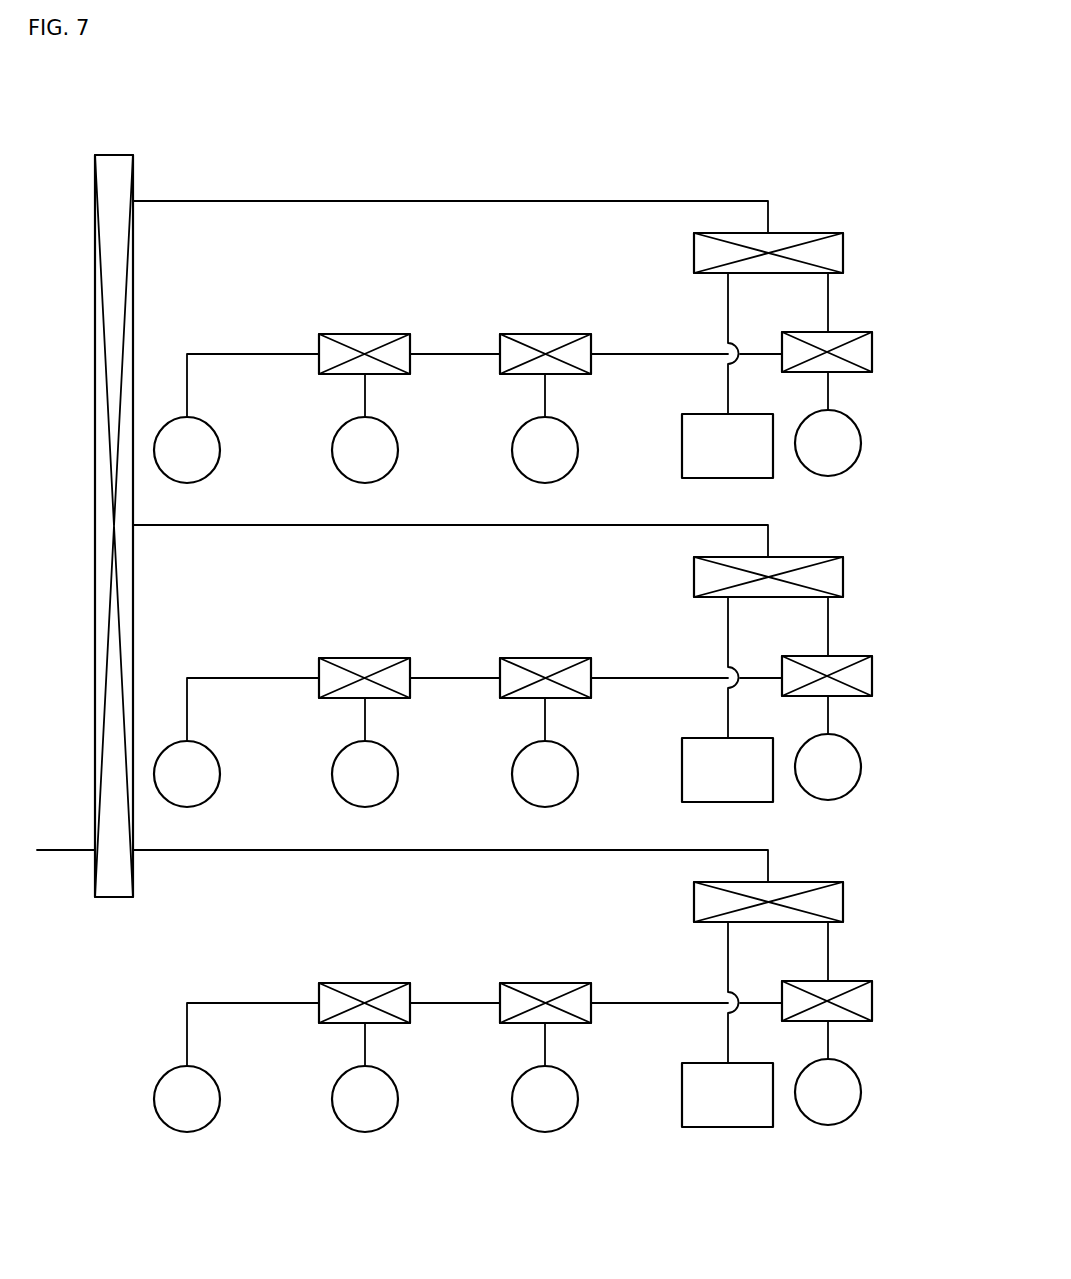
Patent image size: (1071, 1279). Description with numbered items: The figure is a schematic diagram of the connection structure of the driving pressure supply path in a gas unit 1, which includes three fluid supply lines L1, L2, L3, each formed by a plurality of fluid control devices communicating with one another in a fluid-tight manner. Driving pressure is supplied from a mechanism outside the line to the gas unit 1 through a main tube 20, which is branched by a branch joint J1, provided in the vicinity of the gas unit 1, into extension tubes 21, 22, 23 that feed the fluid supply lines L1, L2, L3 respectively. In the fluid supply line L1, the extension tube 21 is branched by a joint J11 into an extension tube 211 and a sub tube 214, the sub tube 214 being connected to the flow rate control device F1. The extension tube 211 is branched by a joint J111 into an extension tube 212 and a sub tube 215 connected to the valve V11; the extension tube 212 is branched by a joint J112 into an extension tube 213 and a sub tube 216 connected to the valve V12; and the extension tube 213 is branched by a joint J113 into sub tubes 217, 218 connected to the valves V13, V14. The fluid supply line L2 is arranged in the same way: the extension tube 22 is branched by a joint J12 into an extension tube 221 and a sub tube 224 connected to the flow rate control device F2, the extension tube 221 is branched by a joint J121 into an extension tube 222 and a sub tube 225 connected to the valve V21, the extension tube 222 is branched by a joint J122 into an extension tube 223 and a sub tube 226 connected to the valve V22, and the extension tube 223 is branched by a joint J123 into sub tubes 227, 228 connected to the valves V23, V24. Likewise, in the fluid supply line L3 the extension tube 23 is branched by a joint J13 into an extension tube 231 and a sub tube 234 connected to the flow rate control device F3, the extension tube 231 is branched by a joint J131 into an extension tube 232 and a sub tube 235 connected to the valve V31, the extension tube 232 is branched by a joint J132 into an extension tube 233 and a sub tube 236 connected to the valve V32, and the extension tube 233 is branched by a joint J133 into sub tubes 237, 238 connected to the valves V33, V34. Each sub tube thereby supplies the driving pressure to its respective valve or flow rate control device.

The gas unit 1 is at (122, 122).
The main tube 20 is at (60, 853).
The branch joint J1 is at (133, 180).
The extension tube 21 is at (461, 850).
The extension tube 22 is at (455, 525).
The extension tube 23 is at (465, 199).
The fluid supply line L1 is at (828, 858).
The fluid supply line L2 is at (828, 533).
The fluid supply line L3 is at (828, 209).
The joint J11 is at (694, 892).
The joint J12 is at (694, 567).
The joint J13 is at (694, 243).
The extension tube 211 is at (828, 949).
The extension tube 212 is at (657, 1001).
The extension tube 213 is at (455, 1001).
The sub tube 214 is at (729, 972).
The sub tube 215 is at (828, 1045).
The sub tube 216 is at (545, 1042).
The sub tube 217 is at (366, 1049).
The sub tube 218 is at (245, 1001).
The extension tube 221 is at (828, 624).
The extension tube 222 is at (657, 676).
The extension tube 223 is at (455, 676).
The sub tube 224 is at (729, 647).
The sub tube 225 is at (828, 720).
The sub tube 226 is at (545, 717).
The sub tube 227 is at (366, 724).
The sub tube 228 is at (245, 676).
The extension tube 231 is at (828, 300).
The extension tube 232 is at (657, 352).
The extension tube 233 is at (455, 352).
The sub tube 234 is at (729, 323).
The sub tube 235 is at (828, 396).
The sub tube 236 is at (545, 393).
The sub tube 237 is at (366, 400).
The sub tube 238 is at (245, 352).
The joint J111 is at (872, 999).
The joint J112 is at (545, 985).
The joint J113 is at (363, 985).
The joint J121 is at (872, 674).
The joint J122 is at (545, 660).
The joint J123 is at (363, 660).
The joint J131 is at (872, 350).
The joint J132 is at (545, 336).
The joint J133 is at (363, 336).
The flow rate control device F1 is at (716, 1106).
The flow rate control device F2 is at (716, 781).
The flow rate control device F3 is at (716, 457).
The valve V11 is at (809, 1104).
The valve V12 is at (526, 1111).
The valve V13 is at (346, 1111).
The valve V14 is at (168, 1111).
The valve V21 is at (809, 779).
The valve V22 is at (526, 786).
The valve V23 is at (346, 786).
The valve V24 is at (168, 786).
The valve V31 is at (809, 455).
The valve V32 is at (526, 462).
The valve V33 is at (346, 462).
The valve V34 is at (168, 462).